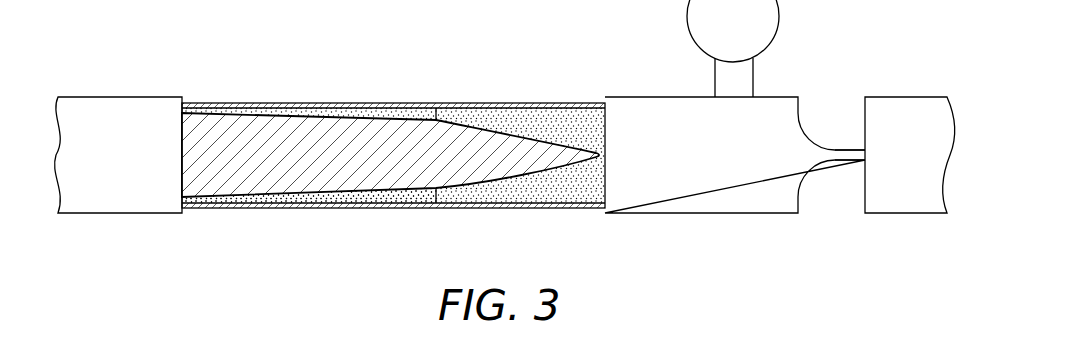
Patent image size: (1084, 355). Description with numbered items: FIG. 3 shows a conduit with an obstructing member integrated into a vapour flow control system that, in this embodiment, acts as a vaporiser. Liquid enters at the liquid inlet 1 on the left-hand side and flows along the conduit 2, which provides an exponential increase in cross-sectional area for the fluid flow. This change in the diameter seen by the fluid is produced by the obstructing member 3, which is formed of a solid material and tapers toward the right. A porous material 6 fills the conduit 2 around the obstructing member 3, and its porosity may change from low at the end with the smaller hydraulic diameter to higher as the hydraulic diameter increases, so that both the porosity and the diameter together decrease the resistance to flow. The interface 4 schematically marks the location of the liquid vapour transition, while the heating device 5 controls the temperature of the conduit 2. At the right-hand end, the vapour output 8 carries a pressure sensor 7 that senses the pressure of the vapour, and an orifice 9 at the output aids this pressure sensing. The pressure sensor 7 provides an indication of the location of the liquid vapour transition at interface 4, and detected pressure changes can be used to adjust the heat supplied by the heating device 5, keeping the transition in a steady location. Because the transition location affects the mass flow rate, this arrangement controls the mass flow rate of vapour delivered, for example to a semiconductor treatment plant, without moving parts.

The liquid inlet 1 is at (168, 111).
The conduit 2 is at (233, 103).
The obstructing member 3 is at (312, 181).
The interface 4 is at (436, 108).
The heating device 5 is at (394, 208).
The porous material 6 is at (560, 188).
The pressure sensor 7 is at (725, 28).
The vapour output 8 is at (862, 162).
The orifice 9 is at (838, 148).